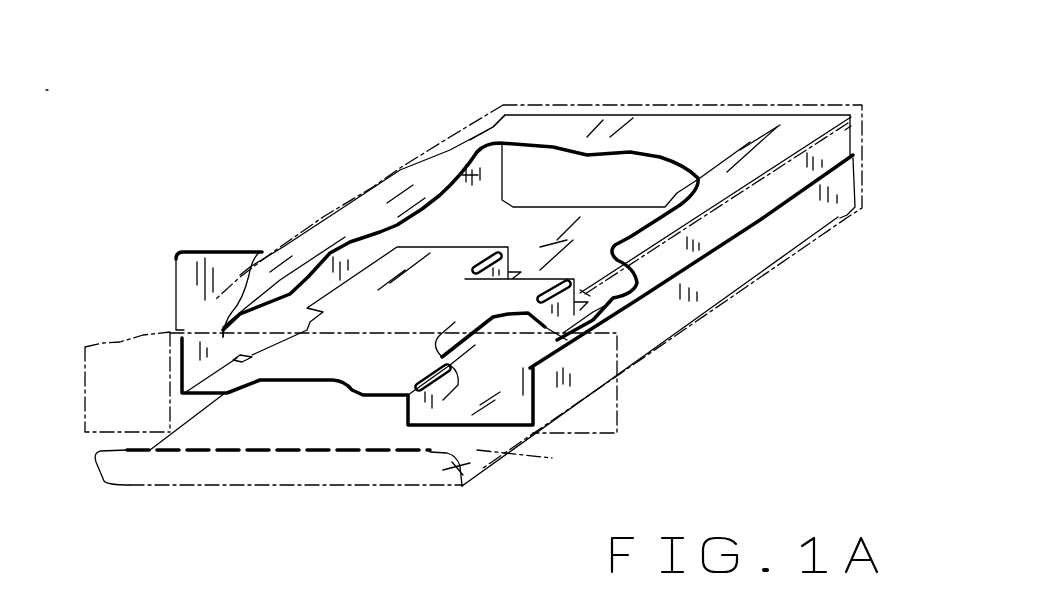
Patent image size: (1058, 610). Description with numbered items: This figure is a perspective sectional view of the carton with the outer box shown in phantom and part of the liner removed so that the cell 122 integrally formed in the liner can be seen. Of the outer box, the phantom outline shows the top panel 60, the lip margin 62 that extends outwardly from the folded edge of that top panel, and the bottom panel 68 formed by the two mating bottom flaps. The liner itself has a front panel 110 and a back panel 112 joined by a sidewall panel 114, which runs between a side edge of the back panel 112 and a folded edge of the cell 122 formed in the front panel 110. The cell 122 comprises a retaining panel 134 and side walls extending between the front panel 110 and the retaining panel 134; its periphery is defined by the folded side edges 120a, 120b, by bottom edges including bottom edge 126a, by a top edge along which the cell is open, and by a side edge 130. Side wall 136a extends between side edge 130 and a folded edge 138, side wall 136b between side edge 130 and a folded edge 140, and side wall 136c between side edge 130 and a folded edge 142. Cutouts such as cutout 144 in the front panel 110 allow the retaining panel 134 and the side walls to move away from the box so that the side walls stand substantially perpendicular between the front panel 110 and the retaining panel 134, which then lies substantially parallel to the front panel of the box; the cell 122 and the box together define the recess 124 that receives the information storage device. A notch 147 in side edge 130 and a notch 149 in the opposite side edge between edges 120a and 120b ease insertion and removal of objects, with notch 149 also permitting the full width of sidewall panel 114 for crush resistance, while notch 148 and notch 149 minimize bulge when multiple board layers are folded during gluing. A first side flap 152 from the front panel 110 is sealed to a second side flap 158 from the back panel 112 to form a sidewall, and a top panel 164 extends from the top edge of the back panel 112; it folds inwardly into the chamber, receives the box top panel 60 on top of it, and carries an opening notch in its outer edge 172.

The top panel 60 is at (547, 457).
The lip margin 62 is at (483, 480).
The bottom panel 68 is at (882, 103).
The front panel 110 is at (619, 254).
The back panel 112 is at (760, 138).
The sidewall panel 114 is at (478, 178).
The folded side edge 120a is at (208, 377).
The folded side edge 120b is at (343, 282).
The cell 122 is at (358, 399).
The recess 124 is at (281, 401).
The bottom edge 126a is at (618, 226).
The side edge 130 is at (460, 388).
The retaining panel 134 is at (418, 305).
The side wall 136a is at (457, 385).
The side wall 136b is at (605, 320).
The side wall 136c is at (514, 258).
The folded edge 138 is at (480, 416).
The folded edge 140 is at (426, 380).
The folded edge 142 is at (577, 284).
The cutout 144 is at (478, 185).
The notch 147 is at (387, 319).
The notch 148 is at (490, 125).
The notch 149 is at (843, 215).
The first side flap 152 is at (833, 190).
The second side flap 158 is at (833, 148).
The top panel 164 is at (214, 278).
The outer edge 172 is at (222, 248).